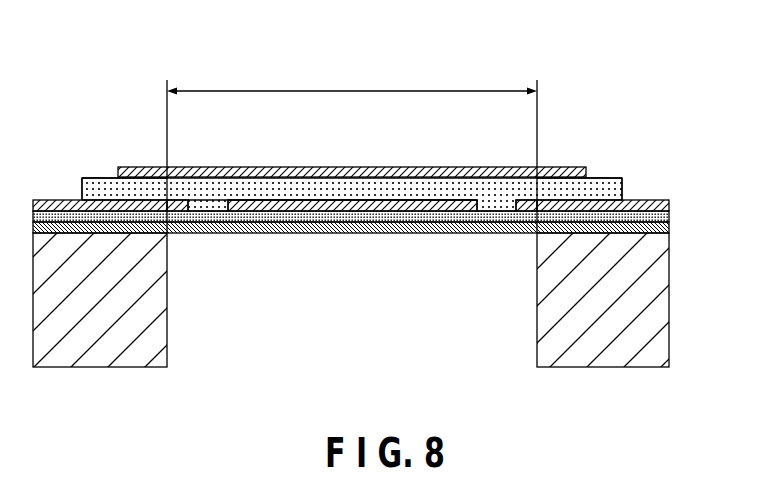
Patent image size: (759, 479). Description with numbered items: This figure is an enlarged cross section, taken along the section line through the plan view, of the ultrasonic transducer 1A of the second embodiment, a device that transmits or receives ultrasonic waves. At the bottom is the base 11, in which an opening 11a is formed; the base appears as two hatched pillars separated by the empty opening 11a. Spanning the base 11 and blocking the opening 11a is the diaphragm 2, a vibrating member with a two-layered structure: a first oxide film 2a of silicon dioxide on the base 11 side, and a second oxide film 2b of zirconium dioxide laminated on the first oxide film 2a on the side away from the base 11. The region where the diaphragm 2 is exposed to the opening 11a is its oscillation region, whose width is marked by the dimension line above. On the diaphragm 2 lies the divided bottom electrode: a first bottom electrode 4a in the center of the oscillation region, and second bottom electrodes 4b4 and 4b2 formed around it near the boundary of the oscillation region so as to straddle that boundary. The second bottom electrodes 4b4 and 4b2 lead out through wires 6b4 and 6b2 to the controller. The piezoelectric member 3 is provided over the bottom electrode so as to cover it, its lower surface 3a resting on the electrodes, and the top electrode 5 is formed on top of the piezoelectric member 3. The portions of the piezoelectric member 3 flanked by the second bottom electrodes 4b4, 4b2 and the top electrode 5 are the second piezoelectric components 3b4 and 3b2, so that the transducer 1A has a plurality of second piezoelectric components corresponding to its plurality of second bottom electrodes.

The ultrasonic transducer 1A is at (388, 208).
The diaphragm 2 is at (390, 232).
The first oxide film 2a is at (669, 228).
The second oxide film 2b is at (669, 217).
The piezoelectric member 3 is at (605, 167).
The first piezoelectric part 3a is at (397, 201).
The second piezoelectric component 3b2 is at (566, 190).
The second piezoelectric component 3b4 is at (128, 190).
The first bottom electrode 4a is at (252, 208).
The second bottom electrode 4b2 is at (517, 208).
The second bottom electrode 4b4 is at (176, 208).
The top electrode 5 is at (363, 166).
The wire 6b2 is at (649, 200).
The wire 6b4 is at (60, 200).
The base 11 is at (663, 300).
The opening 11a is at (271, 331).